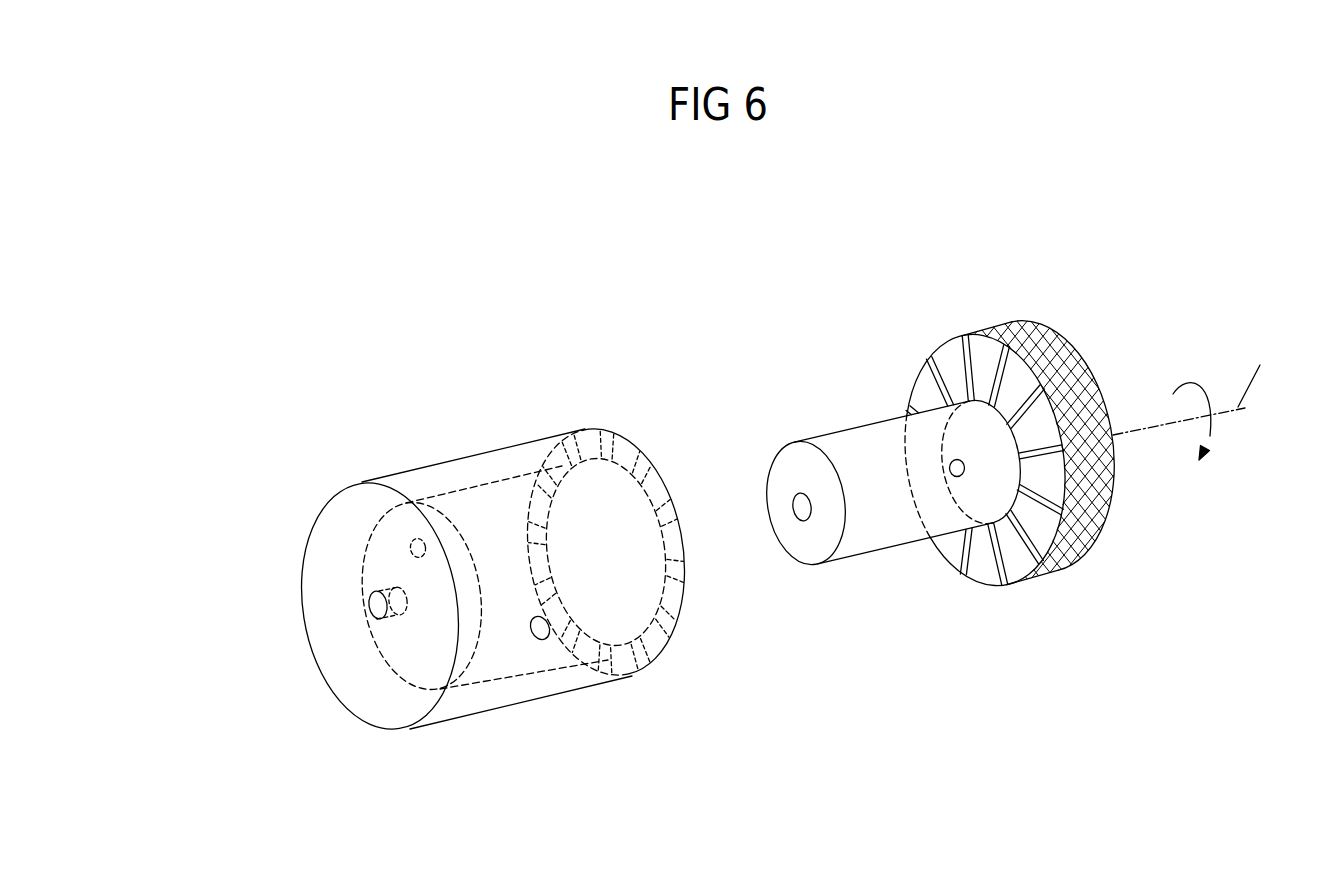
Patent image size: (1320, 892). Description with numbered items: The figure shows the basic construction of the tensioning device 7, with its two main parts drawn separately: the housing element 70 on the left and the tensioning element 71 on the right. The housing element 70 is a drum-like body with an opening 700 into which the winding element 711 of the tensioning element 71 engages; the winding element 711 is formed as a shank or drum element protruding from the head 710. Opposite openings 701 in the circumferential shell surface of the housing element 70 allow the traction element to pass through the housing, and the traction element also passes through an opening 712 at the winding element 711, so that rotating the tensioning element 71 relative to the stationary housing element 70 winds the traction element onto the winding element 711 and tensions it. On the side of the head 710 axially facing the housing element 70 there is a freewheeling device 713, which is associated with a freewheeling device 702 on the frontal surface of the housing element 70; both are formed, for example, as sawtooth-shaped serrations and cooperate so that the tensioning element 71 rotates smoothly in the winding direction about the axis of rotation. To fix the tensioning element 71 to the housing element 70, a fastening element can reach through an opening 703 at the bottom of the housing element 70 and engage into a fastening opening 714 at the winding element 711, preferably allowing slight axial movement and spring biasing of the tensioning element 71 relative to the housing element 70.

The tensioning device 7 is at (680, 383).
The housing element 70 is at (608, 718).
The opening 700 is at (503, 672).
The openings 701 is at (413, 543).
The freewheeling device 702 is at (628, 580).
The opening 703 is at (374, 608).
The tensioning element 71 is at (1000, 616).
The head 710 is at (1065, 557).
The winding element 711 is at (842, 443).
The opening 712 is at (953, 462).
The freewheeling device 713 is at (967, 567).
The fastening opening 714 is at (803, 519).